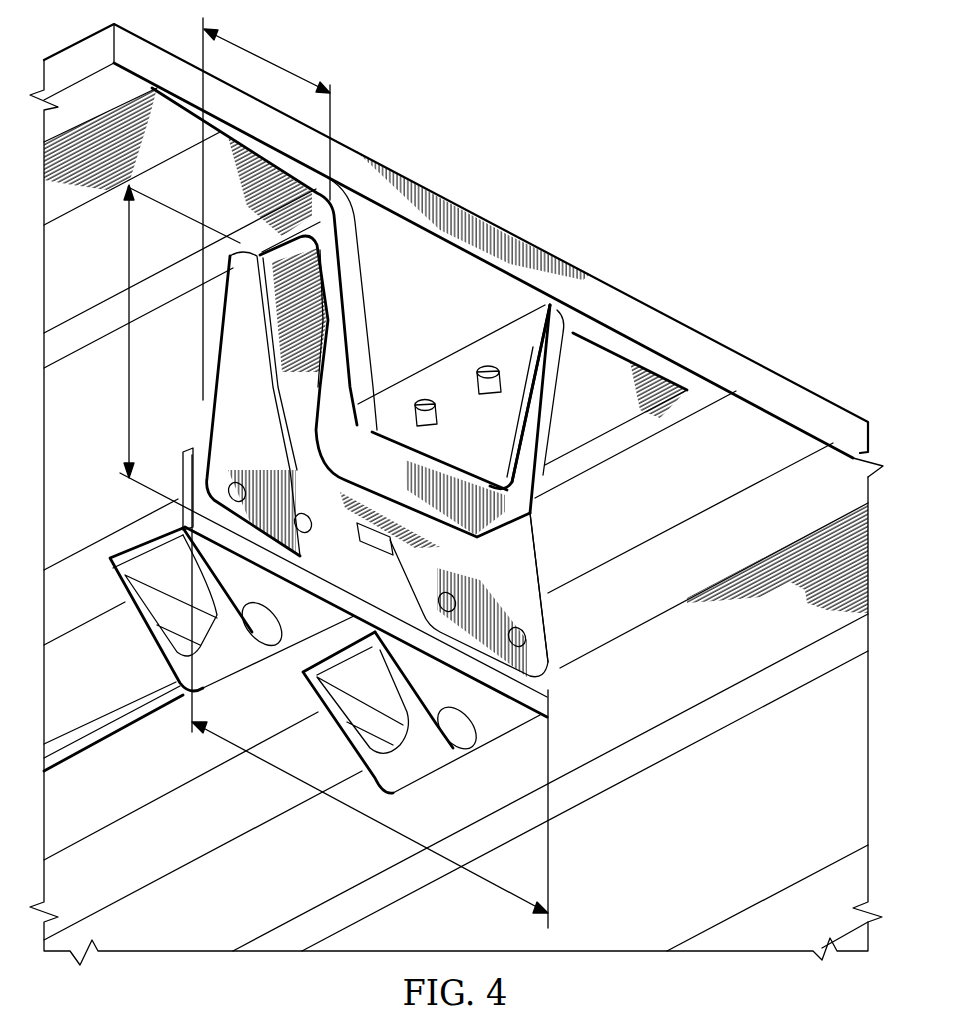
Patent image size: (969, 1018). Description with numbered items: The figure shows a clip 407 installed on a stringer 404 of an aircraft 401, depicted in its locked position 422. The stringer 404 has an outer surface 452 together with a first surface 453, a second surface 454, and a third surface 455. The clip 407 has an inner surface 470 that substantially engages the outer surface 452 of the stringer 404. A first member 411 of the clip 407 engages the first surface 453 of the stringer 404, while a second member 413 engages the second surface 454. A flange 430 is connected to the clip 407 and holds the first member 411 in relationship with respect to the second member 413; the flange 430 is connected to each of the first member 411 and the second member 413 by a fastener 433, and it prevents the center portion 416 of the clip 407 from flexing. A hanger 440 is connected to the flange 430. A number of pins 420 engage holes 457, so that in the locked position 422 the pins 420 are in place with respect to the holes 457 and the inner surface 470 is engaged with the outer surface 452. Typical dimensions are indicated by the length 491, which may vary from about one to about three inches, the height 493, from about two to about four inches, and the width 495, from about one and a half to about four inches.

The aircraft 401 is at (498, 227).
The stringer 404 is at (93, 385).
The clip 407 is at (553, 618).
The first member 411 is at (223, 432).
The second member 413 is at (533, 545).
The center portion 416 is at (372, 548).
The number of pins 420 is at (477, 368).
The locked position 422 is at (647, 638).
The flange 430 is at (540, 690).
The fastener 433 is at (535, 640).
The hanger 440 is at (498, 740).
The outer surface 452 is at (115, 578).
The first surface 453 is at (62, 448).
The second surface 454 is at (560, 365).
The third surface 455 is at (138, 692).
The holes 457 is at (503, 378).
The inner surface 470 is at (323, 363).
The length 491 is at (267, 58).
The height 493 is at (129, 263).
The width 495 is at (322, 793).